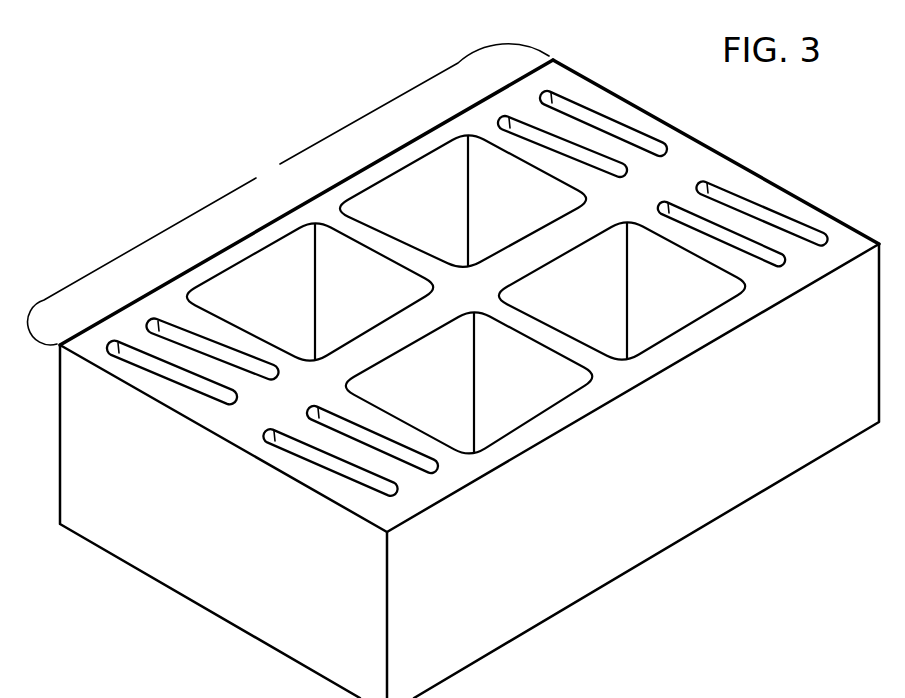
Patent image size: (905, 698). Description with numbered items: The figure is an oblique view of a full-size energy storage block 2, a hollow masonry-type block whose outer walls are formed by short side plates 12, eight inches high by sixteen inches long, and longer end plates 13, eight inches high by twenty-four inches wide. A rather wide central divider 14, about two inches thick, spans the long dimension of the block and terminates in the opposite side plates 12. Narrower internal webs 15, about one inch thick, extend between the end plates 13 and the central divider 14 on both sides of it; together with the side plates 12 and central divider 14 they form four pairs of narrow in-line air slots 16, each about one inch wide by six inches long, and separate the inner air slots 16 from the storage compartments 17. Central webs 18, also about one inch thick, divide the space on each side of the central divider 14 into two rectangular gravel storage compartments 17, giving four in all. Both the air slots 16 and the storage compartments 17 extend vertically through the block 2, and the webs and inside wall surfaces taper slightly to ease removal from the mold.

The full-size energy storage block 2 is at (290, 194).
The side plate 12 is at (707, 147).
The end plate 13 is at (633, 471).
The central divider 14 is at (467, 291).
The internal web 15 is at (610, 152).
The air slot 16 is at (572, 104).
The storage compartment 17 is at (466, 294).
The central web 18 is at (372, 236).